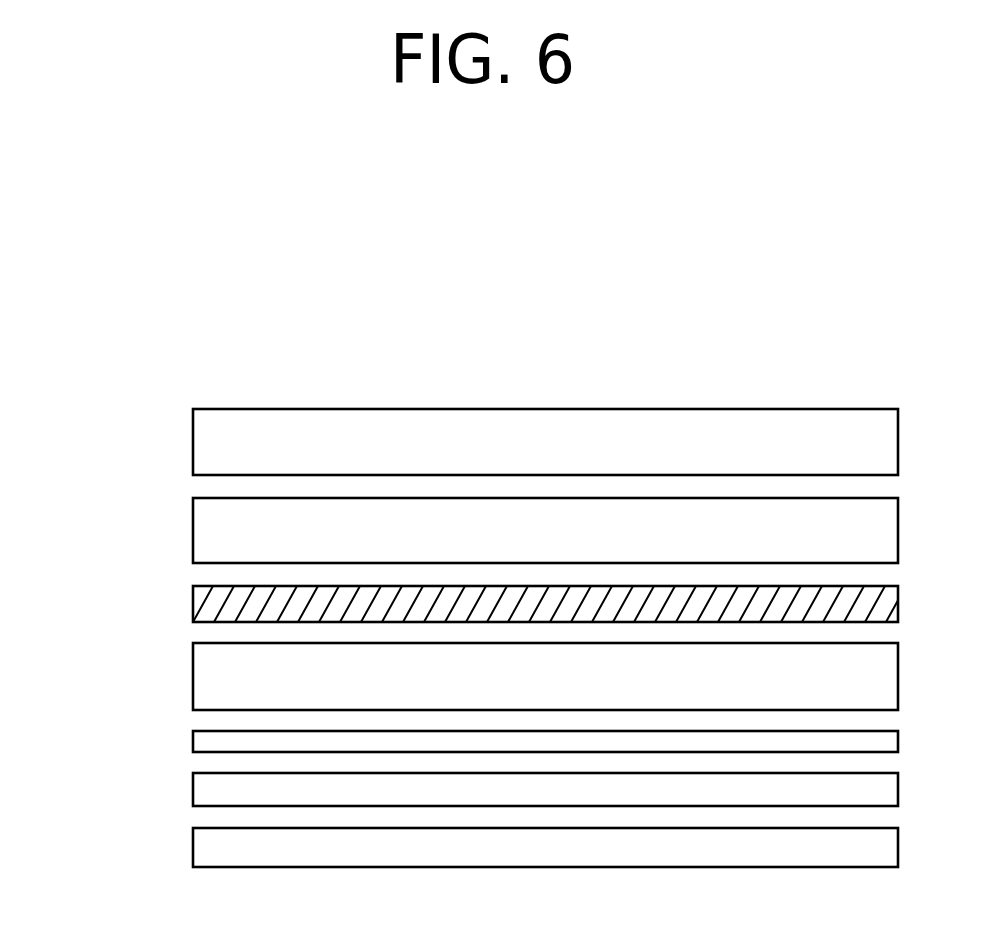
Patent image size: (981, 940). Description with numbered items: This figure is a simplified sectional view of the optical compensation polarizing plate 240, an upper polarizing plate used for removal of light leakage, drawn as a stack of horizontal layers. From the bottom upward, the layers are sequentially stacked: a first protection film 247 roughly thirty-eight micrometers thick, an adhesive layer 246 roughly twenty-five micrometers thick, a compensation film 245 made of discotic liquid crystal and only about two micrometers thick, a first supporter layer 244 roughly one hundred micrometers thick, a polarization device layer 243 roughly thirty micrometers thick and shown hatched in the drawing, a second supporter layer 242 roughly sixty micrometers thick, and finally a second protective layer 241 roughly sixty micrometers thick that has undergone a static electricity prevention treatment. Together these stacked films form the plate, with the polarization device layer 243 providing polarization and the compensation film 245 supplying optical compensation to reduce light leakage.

The optical compensation polarizing plate 240 is at (795, 364).
The second protective layer 241 is at (207, 438).
The second supporter layer 242 is at (207, 528).
The polarization device layer 243 is at (207, 603).
The first supporter layer 244 is at (207, 670).
The compensation film 245 is at (207, 738).
The adhesive layer 246 is at (207, 790).
The first protection film 247 is at (207, 848).